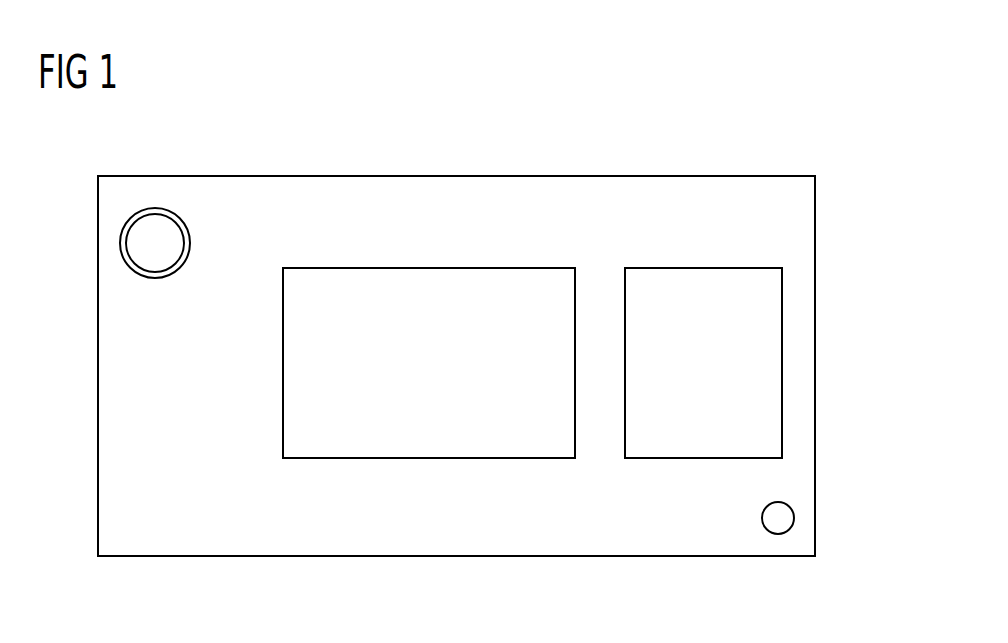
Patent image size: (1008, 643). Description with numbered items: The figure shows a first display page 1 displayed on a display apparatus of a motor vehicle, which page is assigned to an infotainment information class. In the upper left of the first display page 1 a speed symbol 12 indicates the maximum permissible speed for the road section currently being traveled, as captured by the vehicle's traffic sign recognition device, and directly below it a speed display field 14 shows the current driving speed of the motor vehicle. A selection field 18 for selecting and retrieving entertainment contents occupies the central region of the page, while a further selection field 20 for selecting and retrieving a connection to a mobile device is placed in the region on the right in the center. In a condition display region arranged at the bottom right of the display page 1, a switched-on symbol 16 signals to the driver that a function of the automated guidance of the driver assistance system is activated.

The first display page 1 is at (834, 134).
The speed symbol 12 is at (130, 250).
The speed display field 14 is at (148, 327).
The switched-on symbol 16 is at (778, 527).
The selection field 18 is at (433, 443).
The selection field 20 is at (708, 443).